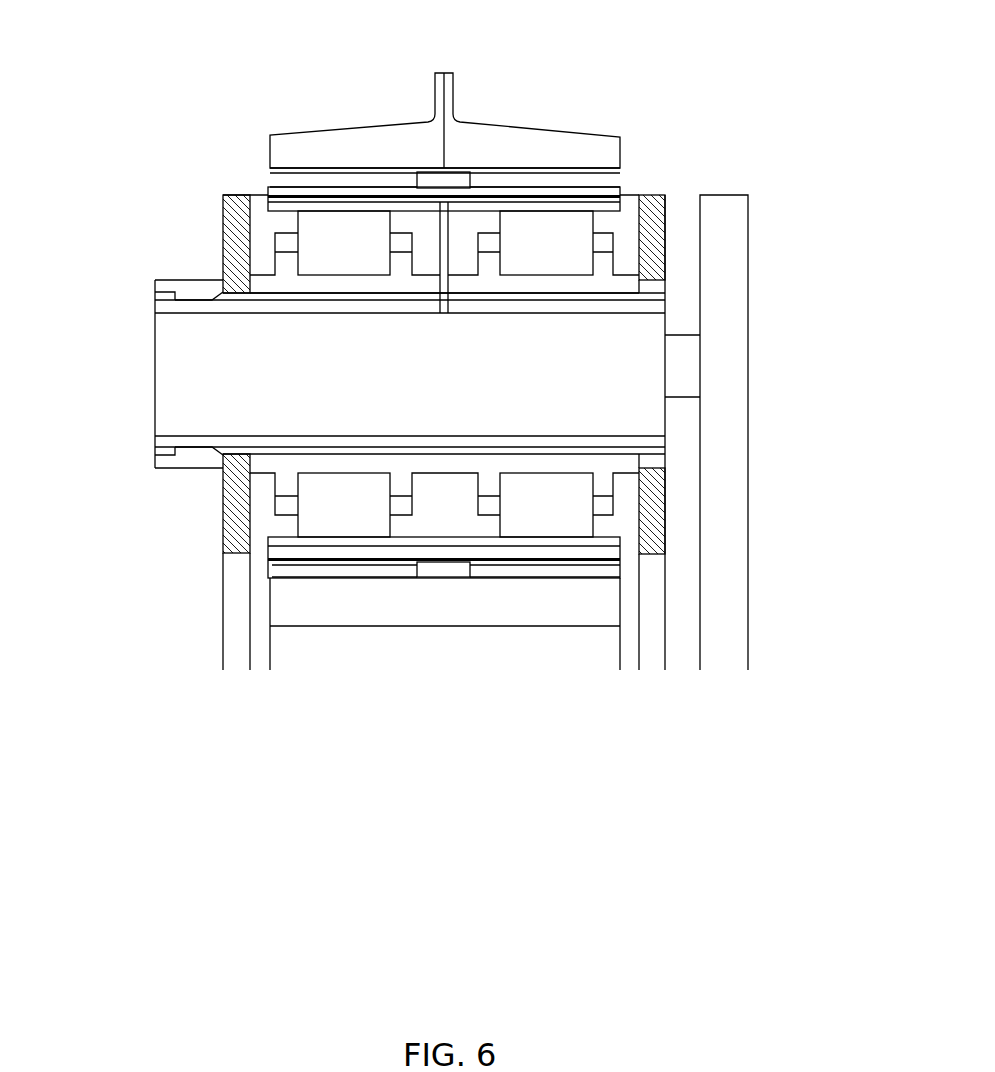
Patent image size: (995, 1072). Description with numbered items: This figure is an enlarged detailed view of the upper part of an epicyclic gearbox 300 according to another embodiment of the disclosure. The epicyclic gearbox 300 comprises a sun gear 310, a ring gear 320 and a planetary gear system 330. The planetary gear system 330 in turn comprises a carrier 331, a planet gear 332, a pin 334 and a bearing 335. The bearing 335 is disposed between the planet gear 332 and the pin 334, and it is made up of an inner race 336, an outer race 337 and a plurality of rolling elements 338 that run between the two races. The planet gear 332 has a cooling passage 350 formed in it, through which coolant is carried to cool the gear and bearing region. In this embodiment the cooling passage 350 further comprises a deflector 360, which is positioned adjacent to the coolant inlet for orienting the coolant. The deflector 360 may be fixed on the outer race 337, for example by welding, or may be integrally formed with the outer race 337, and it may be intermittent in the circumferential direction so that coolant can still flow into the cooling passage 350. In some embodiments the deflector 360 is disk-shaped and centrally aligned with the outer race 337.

The epicyclic gearbox 300 is at (560, 78).
The sun gear 310 is at (612, 608).
The ring gear 320 is at (378, 140).
The planetary gear system 330 is at (138, 251).
The carrier 331 is at (643, 528).
The planet gear 332 is at (278, 551).
The pin 334 is at (182, 442).
The bearing 335 is at (203, 196).
The inner race 336 is at (615, 283).
The outer race 337 is at (610, 212).
The rolling elements 338 is at (346, 237).
The cooling passage 350 is at (629, 183).
The deflector 360 is at (450, 208).